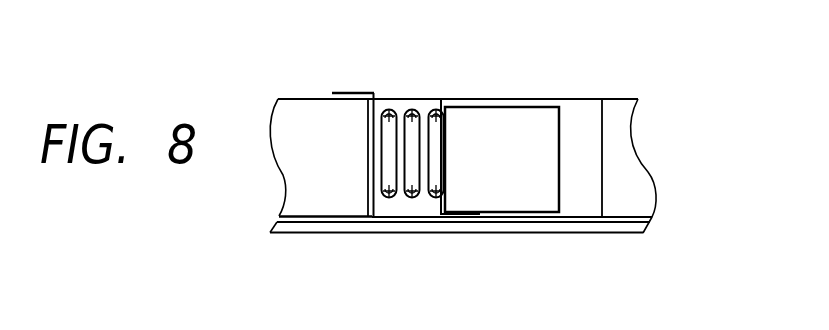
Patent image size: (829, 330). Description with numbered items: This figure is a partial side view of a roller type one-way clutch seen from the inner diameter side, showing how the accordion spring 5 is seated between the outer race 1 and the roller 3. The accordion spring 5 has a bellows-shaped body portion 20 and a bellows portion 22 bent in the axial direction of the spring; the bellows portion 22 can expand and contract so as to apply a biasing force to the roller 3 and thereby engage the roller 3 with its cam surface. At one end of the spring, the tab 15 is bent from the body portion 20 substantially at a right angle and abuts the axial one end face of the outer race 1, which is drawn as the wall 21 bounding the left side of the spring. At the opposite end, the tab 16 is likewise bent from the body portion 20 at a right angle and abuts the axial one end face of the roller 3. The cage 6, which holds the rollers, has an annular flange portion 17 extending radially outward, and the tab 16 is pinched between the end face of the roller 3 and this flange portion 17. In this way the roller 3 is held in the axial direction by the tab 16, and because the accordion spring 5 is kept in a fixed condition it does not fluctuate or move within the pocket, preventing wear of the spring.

The outer race 1 is at (297, 117).
The partition wall 21 is at (315, 98).
The tab 15 is at (350, 88).
The accordion spring 5 is at (424, 92).
The roller 3 is at (508, 120).
The cage 6 is at (582, 115).
The tab 16 is at (466, 216).
The flange portion 17 is at (590, 225).
The body portion 20 is at (410, 198).
The bellows portion 22 is at (390, 198).